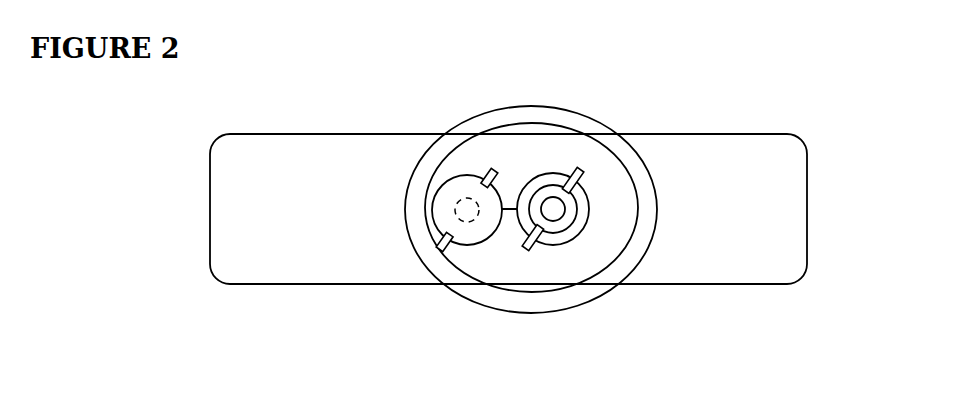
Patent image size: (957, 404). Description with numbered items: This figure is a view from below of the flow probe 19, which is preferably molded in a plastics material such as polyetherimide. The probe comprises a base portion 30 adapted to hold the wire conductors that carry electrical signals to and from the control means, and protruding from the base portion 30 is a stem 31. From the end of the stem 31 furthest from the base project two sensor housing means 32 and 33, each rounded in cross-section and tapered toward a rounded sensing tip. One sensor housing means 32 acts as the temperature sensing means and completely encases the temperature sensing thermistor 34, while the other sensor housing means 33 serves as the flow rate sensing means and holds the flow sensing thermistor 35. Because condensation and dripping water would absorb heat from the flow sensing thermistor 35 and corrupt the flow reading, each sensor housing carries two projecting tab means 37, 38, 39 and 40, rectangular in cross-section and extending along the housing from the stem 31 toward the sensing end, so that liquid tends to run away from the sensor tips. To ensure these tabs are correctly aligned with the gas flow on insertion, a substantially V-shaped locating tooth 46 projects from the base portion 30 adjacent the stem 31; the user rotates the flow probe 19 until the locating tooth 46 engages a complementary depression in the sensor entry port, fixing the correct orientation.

The flow probe 19 is at (390, 62).
The base portion 30 is at (508, 209).
The stem 31 is at (525, 124).
The sensor housing means 32 is at (467, 247).
The sensor housing means 33 is at (557, 247).
The temperature sensing means 34 is at (466, 188).
The flow sensing thermistor 35 is at (551, 205).
The tab means 37 is at (573, 176).
The tab means 38 is at (487, 176).
The tab means 39 is at (531, 250).
The tab means 40 is at (447, 247).
The locating tooth 46 is at (568, 210).